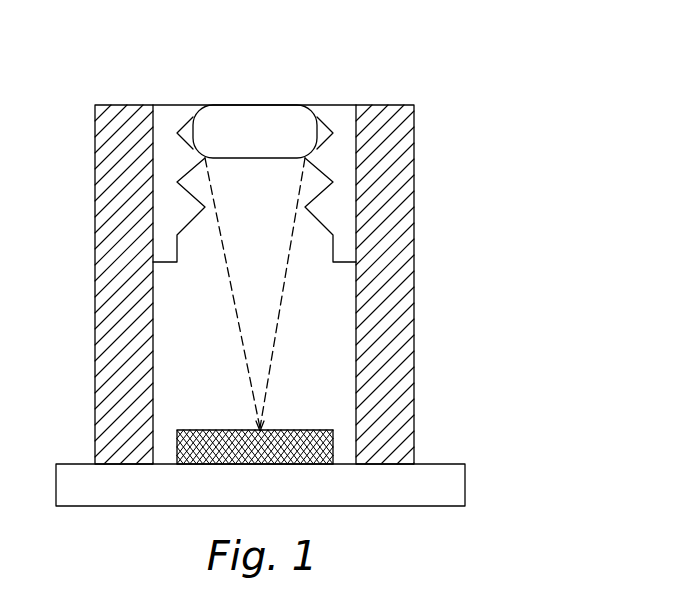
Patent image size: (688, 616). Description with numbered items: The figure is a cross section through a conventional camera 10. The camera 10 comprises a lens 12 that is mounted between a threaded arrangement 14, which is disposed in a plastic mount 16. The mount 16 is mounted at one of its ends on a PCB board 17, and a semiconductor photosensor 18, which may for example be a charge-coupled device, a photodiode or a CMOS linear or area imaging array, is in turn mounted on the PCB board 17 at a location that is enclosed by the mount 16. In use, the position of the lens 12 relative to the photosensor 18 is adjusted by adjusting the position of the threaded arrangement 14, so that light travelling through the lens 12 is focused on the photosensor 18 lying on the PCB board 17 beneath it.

The conventional camera 10 is at (417, 86).
The lens 12 is at (262, 117).
The threaded arrangement 14 is at (175, 110).
The plastic mount 16 is at (108, 130).
The PCB board 17 is at (438, 475).
The semiconductor photosensor 18 is at (313, 430).